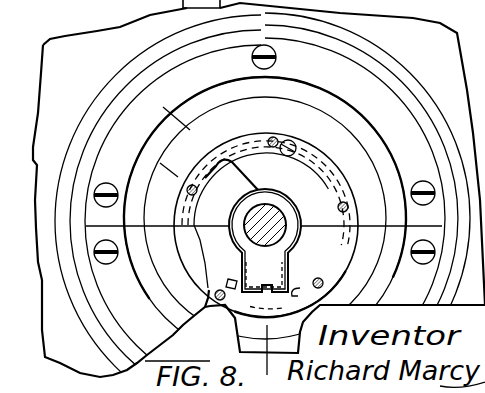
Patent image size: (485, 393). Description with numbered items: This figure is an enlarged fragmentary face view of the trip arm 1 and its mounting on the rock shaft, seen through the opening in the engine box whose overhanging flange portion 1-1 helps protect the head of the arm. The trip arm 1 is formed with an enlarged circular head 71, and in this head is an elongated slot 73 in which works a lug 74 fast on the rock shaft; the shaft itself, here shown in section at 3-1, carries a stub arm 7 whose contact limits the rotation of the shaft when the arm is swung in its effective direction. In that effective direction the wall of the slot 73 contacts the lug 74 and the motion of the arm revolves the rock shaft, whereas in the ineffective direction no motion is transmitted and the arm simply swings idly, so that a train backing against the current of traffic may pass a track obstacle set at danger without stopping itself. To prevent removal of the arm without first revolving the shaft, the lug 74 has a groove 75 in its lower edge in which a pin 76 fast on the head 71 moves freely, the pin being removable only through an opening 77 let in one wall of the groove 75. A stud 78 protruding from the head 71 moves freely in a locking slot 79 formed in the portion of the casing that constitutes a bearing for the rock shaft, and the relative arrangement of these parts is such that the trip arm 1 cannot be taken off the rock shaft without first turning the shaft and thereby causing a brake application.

The trip arm 1 is at (247, 331).
The overhanging flange portion 1-1 is at (265, 218).
The spindle 3-1 is at (278, 229).
The stub arm 7 is at (305, 38).
The enlarged circular head 71 is at (185, 272).
The elongated slot 73 is at (258, 177).
The lug 74 is at (256, 265).
The groove 75 is at (311, 262).
The pin 76 is at (232, 230).
The opening 77 is at (307, 291).
The stud 78 is at (292, 146).
The locking slot 79 is at (318, 160).